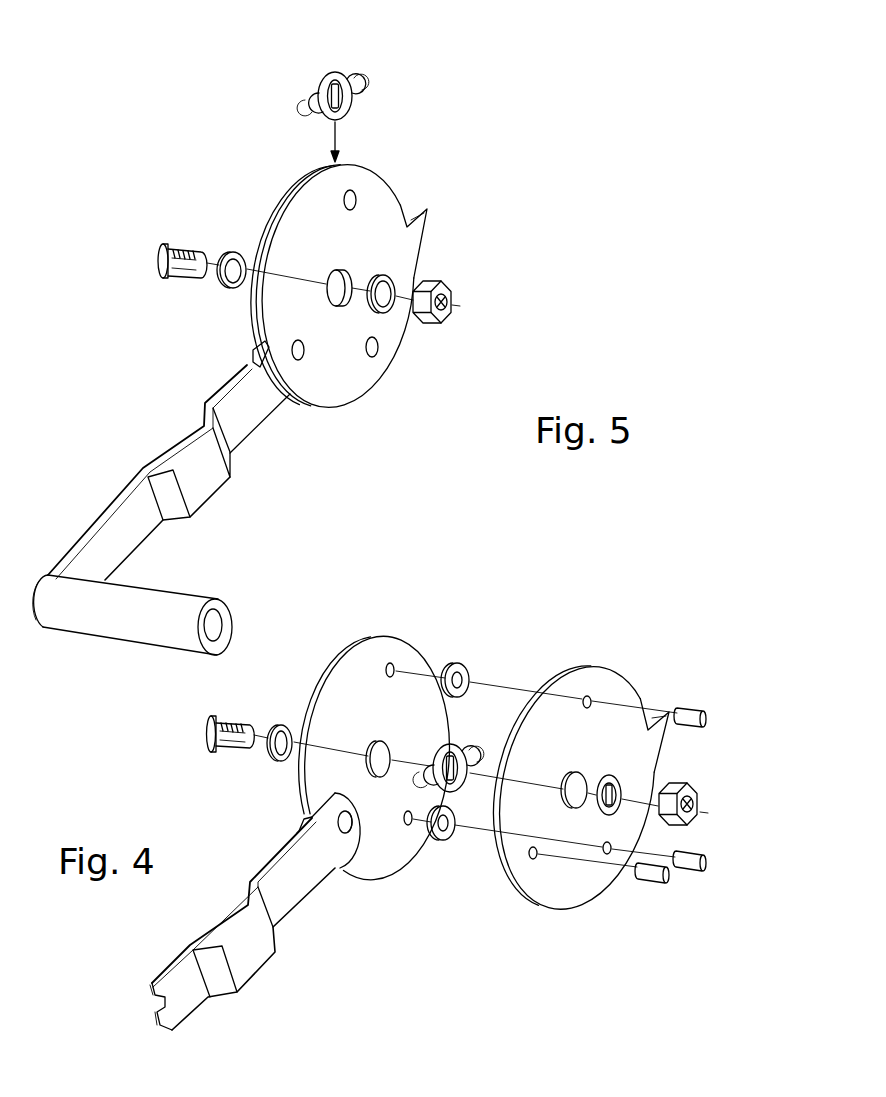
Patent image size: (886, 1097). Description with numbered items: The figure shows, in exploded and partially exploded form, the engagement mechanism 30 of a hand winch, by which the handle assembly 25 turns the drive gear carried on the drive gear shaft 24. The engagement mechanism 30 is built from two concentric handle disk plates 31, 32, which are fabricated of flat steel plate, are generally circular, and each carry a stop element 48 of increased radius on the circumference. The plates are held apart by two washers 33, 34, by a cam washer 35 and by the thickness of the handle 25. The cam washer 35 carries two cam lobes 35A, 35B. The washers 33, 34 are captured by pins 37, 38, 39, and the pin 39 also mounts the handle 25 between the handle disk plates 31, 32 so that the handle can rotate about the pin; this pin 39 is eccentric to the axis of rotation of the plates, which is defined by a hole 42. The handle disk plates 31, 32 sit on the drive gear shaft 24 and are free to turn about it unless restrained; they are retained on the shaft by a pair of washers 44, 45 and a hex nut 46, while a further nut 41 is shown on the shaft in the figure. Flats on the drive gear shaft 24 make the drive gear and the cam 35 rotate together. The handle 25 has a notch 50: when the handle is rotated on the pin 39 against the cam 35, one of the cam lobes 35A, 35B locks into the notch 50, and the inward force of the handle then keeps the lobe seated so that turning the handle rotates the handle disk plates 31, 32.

In FIG. 5, the drive gear shaft 24 is at (186, 272).
In FIG. 4, the drive gear shaft 24 is at (218, 717).
In FIG. 5, the handle assembly 25 is at (128, 512).
In FIG. 4, the handle assembly 25 is at (281, 877).
In FIG. 5, the engagement mechanism 30 is at (490, 212).
In FIG. 4, the engagement mechanism 30 is at (703, 684).
In FIG. 4, the handle disk plate 31 is at (652, 750).
In FIG. 4, the handle disk plate 32 is at (367, 674).
In FIG. 4, the washer 33 is at (462, 664).
In FIG. 4, the washer 34 is at (441, 838).
In FIG. 5, the cam washer 35 is at (332, 70).
In FIG. 4, the cam washer 35 is at (452, 750).
In FIG. 5, the cam lobe 35A is at (322, 104).
In FIG. 4, the cam lobe 35A is at (424, 783).
In FIG. 5, the cam lobe 35B is at (373, 87).
In FIG. 4, the cam lobe 35B is at (470, 760).
In FIG. 4, the pin 37 is at (698, 711).
In FIG. 4, the pin 38 is at (700, 860).
In FIG. 4, the pin 39 is at (653, 878).
In FIG. 5, the nut 41 is at (445, 283).
In FIG. 4, the hole 42 is at (585, 774).
In FIG. 5, the washer 44 is at (232, 252).
In FIG. 4, the washer 44 is at (285, 724).
In FIG. 5, the washer 45 is at (384, 275).
In FIG. 4, the washer 45 is at (592, 813).
In FIG. 4, the hex nut 46 is at (700, 797).
In FIG. 5, the stop element 48 is at (410, 214).
In FIG. 4, the stop element 48 is at (660, 708).
In FIG. 4, the notch 50 is at (302, 823).